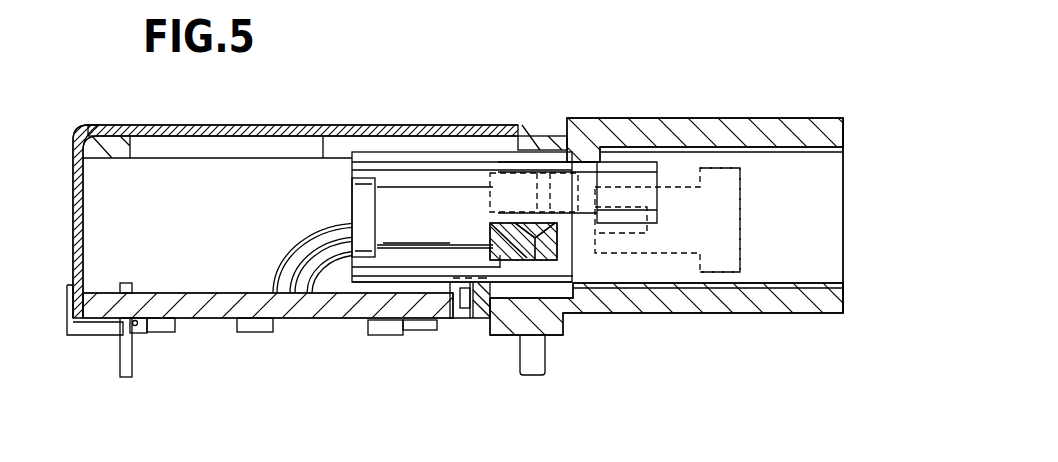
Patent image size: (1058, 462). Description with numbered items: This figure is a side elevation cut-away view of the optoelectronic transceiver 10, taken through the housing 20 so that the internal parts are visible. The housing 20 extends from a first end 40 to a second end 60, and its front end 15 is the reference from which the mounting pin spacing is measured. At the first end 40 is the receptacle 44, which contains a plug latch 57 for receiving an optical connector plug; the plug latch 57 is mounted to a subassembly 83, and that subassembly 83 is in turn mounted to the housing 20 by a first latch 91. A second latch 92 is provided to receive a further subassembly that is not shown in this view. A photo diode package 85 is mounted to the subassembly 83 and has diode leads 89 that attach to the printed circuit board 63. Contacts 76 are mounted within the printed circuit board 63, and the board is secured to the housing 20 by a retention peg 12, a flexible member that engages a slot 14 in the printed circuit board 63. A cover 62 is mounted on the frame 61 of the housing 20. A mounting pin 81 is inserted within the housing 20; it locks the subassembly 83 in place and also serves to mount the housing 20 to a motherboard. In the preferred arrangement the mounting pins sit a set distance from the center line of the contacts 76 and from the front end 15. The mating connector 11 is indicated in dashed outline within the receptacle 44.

The transceiver 10 is at (384, 98).
The mating connector 11 is at (637, 219).
The retention peg 12 is at (447, 290).
The slot 14 is at (448, 318).
The front end 15 is at (843, 248).
The housing 20 is at (412, 318).
The first end 40 is at (770, 272).
The receptacle 44 is at (832, 210).
The plug latch 57 is at (727, 233).
The second end 60 is at (188, 262).
The frame 61 is at (267, 150).
The cover 62 is at (166, 125).
The printed circuit board 63 is at (292, 307).
The contacts 76 is at (125, 362).
The mounting pin 81 is at (535, 350).
The subassembly 83 is at (388, 226).
The photo diode package 85 is at (360, 208).
The diode leads 89 is at (285, 257).
The first latch 91 is at (493, 190).
The second latch 92 is at (495, 238).